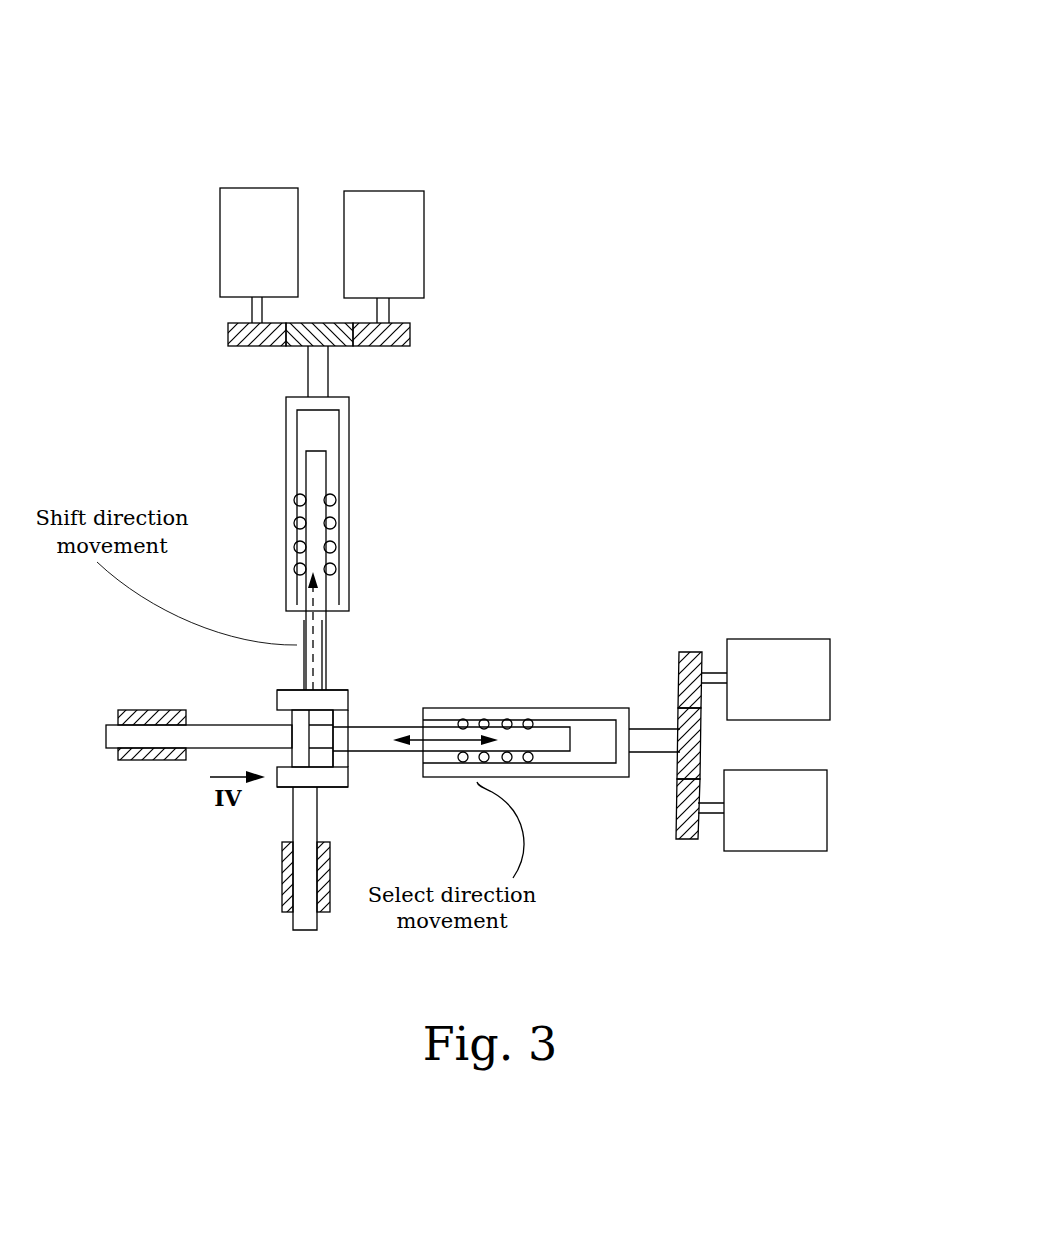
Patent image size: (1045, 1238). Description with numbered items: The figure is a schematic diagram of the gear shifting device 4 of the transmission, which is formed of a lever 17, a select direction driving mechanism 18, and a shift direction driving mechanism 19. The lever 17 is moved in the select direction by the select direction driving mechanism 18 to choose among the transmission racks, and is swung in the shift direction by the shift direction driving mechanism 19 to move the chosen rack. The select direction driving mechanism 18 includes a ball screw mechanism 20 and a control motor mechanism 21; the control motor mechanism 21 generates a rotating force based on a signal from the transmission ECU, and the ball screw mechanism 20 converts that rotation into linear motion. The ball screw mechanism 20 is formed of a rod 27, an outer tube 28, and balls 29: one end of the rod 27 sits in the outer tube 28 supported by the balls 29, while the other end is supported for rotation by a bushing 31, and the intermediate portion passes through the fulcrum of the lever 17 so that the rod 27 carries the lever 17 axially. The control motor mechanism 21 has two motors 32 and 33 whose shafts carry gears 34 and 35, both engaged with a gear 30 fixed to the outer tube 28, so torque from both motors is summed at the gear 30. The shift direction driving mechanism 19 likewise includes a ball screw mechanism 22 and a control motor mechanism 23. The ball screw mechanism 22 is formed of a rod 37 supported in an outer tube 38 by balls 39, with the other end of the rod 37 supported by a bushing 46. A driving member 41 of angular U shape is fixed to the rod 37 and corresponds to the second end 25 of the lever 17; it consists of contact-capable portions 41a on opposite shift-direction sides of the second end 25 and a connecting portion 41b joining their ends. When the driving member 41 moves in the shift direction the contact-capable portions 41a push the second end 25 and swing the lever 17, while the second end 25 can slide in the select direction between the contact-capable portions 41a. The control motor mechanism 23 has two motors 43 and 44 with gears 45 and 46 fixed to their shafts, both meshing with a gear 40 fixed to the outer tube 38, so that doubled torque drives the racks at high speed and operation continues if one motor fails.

The gear shifting device 4 is at (682, 163).
The lever 17 is at (297, 738).
The select direction driving mechanism 18 is at (812, 470).
The shift direction driving mechanism 19 is at (583, 222).
The ball screw mechanism 20 is at (578, 660).
The control motor mechanism 21 is at (803, 630).
The ball screw mechanism 22 is at (375, 505).
The control motor mechanism 23 is at (440, 250).
The second end 25 is at (276, 718).
The rod 27 is at (372, 744).
The outer tube 28 is at (572, 768).
The balls 29 is at (508, 720).
The gear 30 is at (688, 716).
The bushing 31 is at (142, 760).
The motor 32 is at (840, 683).
The motor 33 is at (834, 832).
The gear 34 is at (692, 652).
The gear 35 is at (678, 822).
The rod 37 is at (312, 556).
The outer tube 38 is at (288, 473).
The balls 39 is at (292, 503).
The gear 40 is at (342, 347).
The driving member 41 is at (333, 700).
The contact-capable portions 41a is at (293, 687).
The connecting portion 41b is at (360, 729).
The motor 43 is at (208, 200).
The motor 44 is at (420, 182).
The gear 45 is at (253, 337).
The gear 46 is at (404, 340).